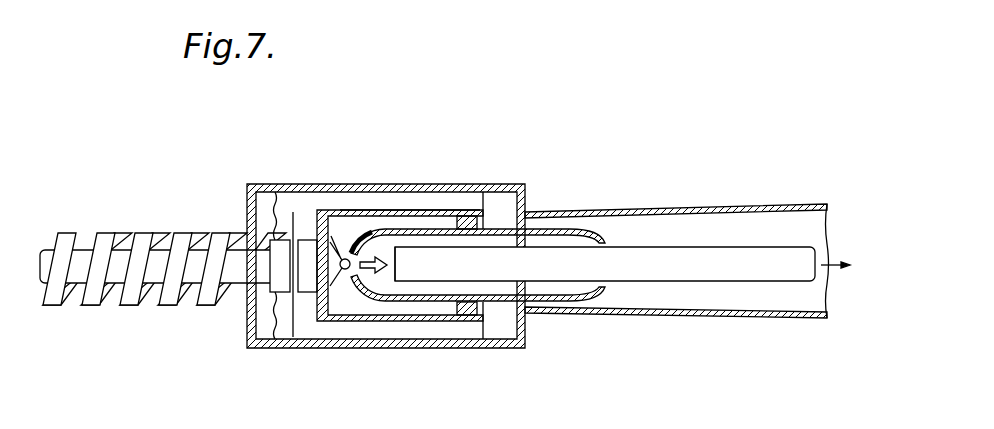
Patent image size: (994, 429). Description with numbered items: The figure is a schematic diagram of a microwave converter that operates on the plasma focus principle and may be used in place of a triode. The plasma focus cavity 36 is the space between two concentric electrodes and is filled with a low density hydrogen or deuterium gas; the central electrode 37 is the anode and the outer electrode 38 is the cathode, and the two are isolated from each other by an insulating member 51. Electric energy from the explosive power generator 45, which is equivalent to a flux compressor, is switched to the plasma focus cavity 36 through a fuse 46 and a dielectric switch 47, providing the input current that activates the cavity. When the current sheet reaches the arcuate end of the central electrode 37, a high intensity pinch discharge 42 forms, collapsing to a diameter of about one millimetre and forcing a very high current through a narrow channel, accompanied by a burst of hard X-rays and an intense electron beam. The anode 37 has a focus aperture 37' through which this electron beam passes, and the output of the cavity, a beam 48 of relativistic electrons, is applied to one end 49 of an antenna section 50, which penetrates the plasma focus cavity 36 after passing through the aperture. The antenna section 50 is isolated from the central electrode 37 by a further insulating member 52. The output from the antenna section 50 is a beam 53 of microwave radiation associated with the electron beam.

The plasma focus cavity 36 is at (380, 216).
The central electrode 37 is at (347, 320).
The focus aperture 37' is at (336, 196).
The outer electrode 38 is at (437, 211).
The pinch discharge 42 is at (293, 212).
The explosive power generator 45 is at (222, 314).
The fuse 46 is at (266, 203).
The dielectric switch 47 is at (292, 338).
The beam of relativistic electrons 48 is at (384, 270).
The end of antenna section 49 is at (413, 270).
The antenna section 50 is at (693, 268).
The insulating member 51 is at (482, 211).
The insulating member 52 is at (598, 233).
The beam of microwave radiation 53 is at (838, 270).